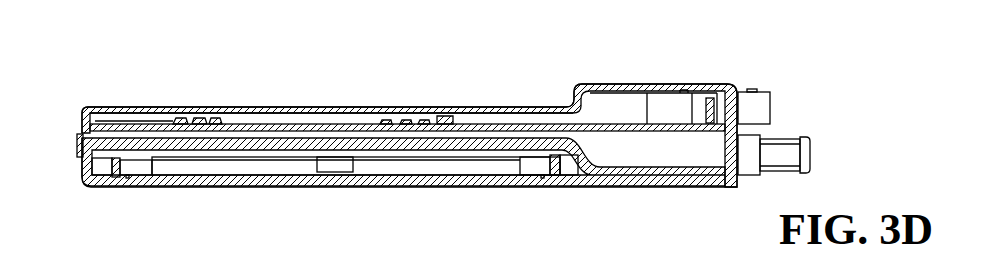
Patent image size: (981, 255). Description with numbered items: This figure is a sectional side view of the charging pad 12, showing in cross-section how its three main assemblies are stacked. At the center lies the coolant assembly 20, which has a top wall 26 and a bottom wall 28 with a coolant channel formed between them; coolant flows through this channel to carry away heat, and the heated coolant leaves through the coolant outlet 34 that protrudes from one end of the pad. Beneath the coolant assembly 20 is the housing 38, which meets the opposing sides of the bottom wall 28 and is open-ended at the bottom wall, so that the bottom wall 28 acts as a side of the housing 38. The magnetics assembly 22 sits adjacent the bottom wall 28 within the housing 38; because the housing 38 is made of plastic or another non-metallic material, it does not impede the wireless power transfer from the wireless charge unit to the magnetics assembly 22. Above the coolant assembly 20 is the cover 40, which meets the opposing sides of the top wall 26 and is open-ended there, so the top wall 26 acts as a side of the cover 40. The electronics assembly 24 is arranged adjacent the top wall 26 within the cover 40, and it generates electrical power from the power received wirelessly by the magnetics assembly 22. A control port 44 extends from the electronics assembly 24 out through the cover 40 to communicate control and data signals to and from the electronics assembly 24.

The charging pad 12 is at (561, 51).
The coolant assembly 20 is at (72, 145).
The magnetics assembly 22 is at (466, 195).
The electronics assembly 24 is at (455, 96).
The top wall 26 is at (247, 122).
The bottom wall 28 is at (222, 147).
The coolant outlet 34 is at (808, 157).
The housing 38 is at (258, 165).
The cover 40 is at (318, 106).
The control port 44 is at (773, 108).